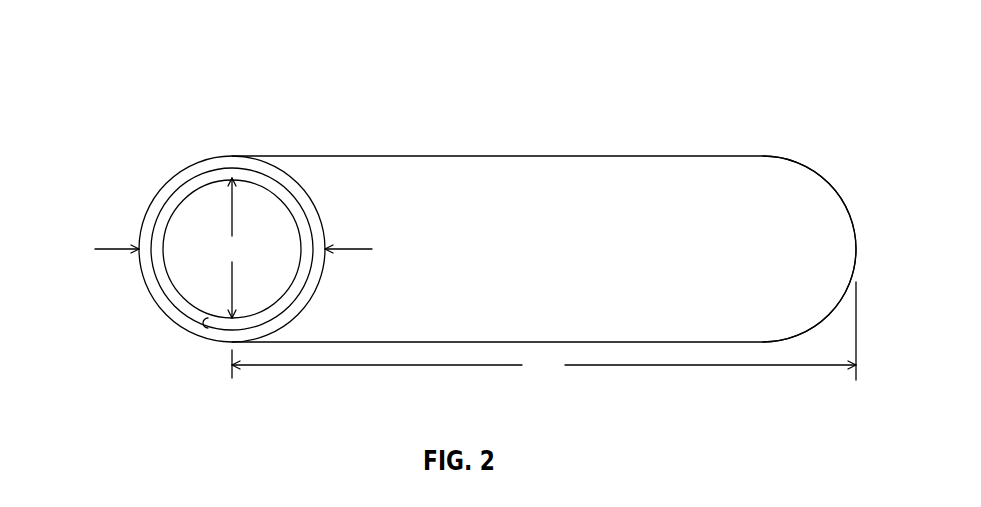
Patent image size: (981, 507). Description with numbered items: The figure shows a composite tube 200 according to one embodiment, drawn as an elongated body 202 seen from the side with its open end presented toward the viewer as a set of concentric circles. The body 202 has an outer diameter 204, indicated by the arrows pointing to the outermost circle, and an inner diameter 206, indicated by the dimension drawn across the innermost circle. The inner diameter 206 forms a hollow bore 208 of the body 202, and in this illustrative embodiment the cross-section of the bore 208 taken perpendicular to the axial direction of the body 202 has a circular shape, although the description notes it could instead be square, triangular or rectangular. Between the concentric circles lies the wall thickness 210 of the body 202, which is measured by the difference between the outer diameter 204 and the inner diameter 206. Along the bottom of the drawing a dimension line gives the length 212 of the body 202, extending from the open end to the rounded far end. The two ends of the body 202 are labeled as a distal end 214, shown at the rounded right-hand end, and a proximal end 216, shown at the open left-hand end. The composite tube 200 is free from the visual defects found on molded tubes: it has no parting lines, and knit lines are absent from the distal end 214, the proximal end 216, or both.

The composite tube 200 is at (567, 42).
The body 202 is at (487, 156).
The outer diameter 204 is at (112, 249).
The inner diameter 206 is at (232, 248).
The hollow bore 208 is at (187, 268).
The wall thickness 210 is at (208, 328).
The length 212 is at (544, 331).
The distal end 214 is at (760, 150).
The proximal end 216 is at (232, 150).